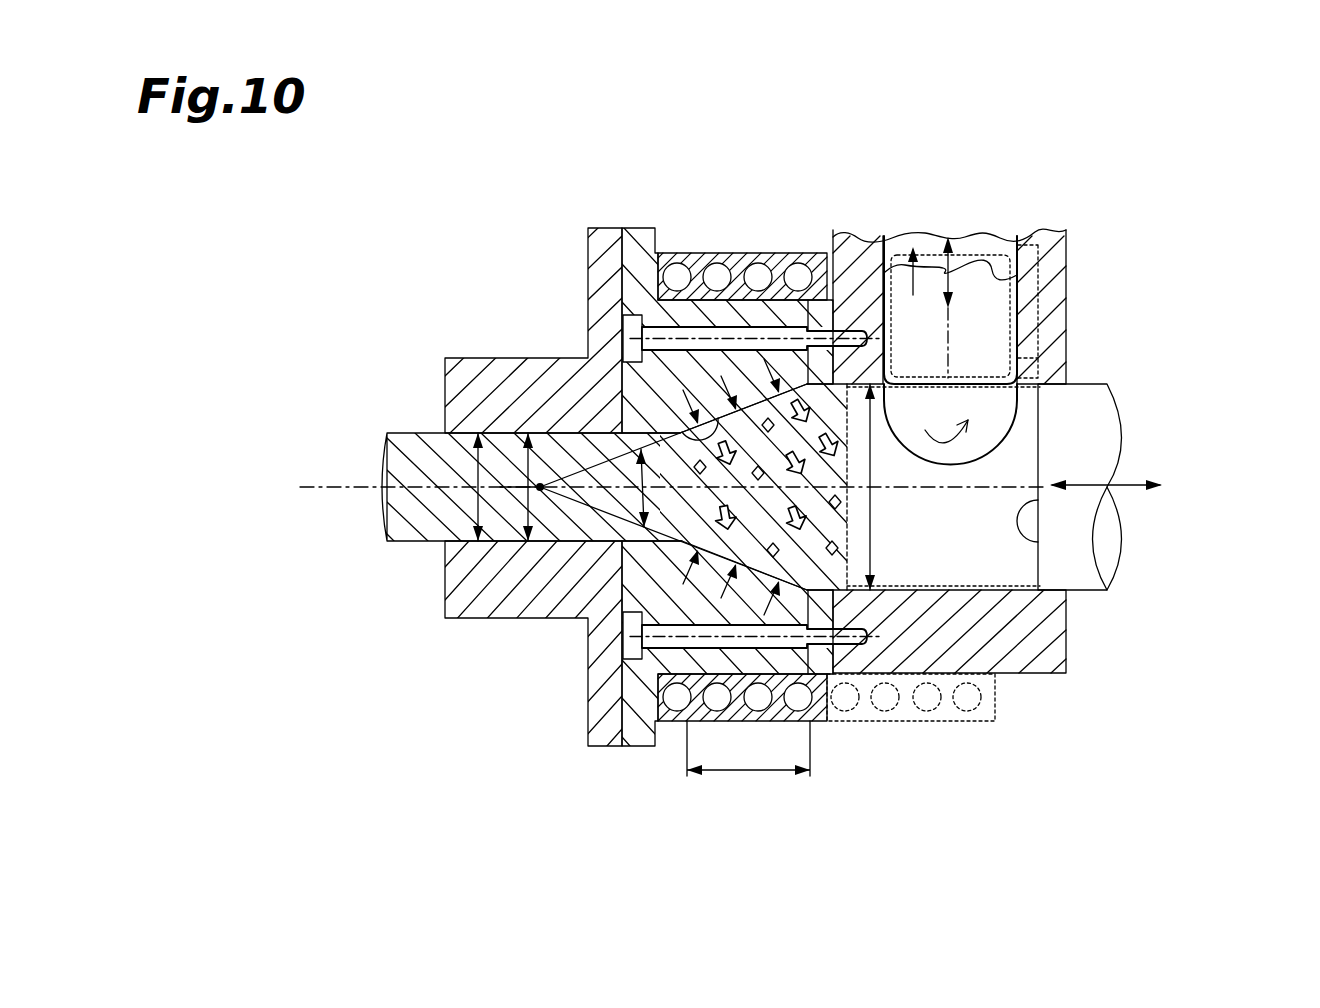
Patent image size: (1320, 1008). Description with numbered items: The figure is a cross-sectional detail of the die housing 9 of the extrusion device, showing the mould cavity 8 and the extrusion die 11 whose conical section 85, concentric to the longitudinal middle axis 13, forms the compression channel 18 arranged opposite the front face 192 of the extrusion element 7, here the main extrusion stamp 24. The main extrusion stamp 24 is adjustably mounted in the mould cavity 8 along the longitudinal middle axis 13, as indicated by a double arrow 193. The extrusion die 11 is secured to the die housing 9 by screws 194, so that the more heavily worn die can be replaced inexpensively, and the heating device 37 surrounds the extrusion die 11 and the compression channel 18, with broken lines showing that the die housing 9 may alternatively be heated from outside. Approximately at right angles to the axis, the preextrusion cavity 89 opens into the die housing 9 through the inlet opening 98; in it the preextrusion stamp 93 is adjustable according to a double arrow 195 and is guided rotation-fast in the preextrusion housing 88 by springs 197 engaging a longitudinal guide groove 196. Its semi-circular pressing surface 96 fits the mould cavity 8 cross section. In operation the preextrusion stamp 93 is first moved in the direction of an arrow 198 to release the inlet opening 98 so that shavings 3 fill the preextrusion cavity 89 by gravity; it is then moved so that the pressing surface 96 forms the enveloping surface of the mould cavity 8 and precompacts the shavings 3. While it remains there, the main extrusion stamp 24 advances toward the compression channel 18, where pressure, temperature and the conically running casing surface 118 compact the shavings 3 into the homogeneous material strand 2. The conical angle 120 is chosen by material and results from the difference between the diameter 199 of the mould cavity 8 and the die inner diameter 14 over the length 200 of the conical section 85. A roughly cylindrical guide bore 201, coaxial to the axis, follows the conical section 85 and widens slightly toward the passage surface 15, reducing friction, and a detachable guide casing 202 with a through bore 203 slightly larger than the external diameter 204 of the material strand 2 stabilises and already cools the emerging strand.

The material strand 2 is at (418, 465).
The shavings 3 is at (777, 254).
The extrusion element 7 is at (1135, 381).
The mould cavity 8 is at (1012, 580).
The die housing 9 is at (1047, 632).
The extrusion die 11 is at (560, 600).
The longitudinal middle axis 13 is at (973, 495).
The die inner diameter 14 is at (538, 489).
The passage surface 15 is at (620, 408).
The compression channel 18 is at (858, 469).
The main extrusion stamp 24 is at (1078, 428).
The heating device 37 is at (731, 236).
The conical section 85 is at (737, 448).
The preextrusion housing 88 is at (1063, 337).
The preextrusion cavity 89 is at (1003, 295).
The preextrusion stamp 93 is at (975, 302).
The pressing surface 96 is at (923, 420).
The inlet opening 98 is at (913, 253).
The conically running casing surface 118 is at (690, 440).
The conical angle 120 is at (655, 575).
The front face 192 is at (1040, 542).
The double arrow 193 is at (1128, 478).
The screws 194 is at (682, 257).
The double arrow 195 is at (973, 310).
The guide groove 196 is at (1033, 262).
The springs 197 is at (1050, 347).
The arrow 198 is at (933, 253).
The diameter 199 is at (912, 520).
The length 200 is at (756, 776).
The guide bore 201 is at (483, 618).
The guide casing 202 is at (472, 393).
The through bore 203 is at (447, 546).
The external diameter 204 is at (680, 433).